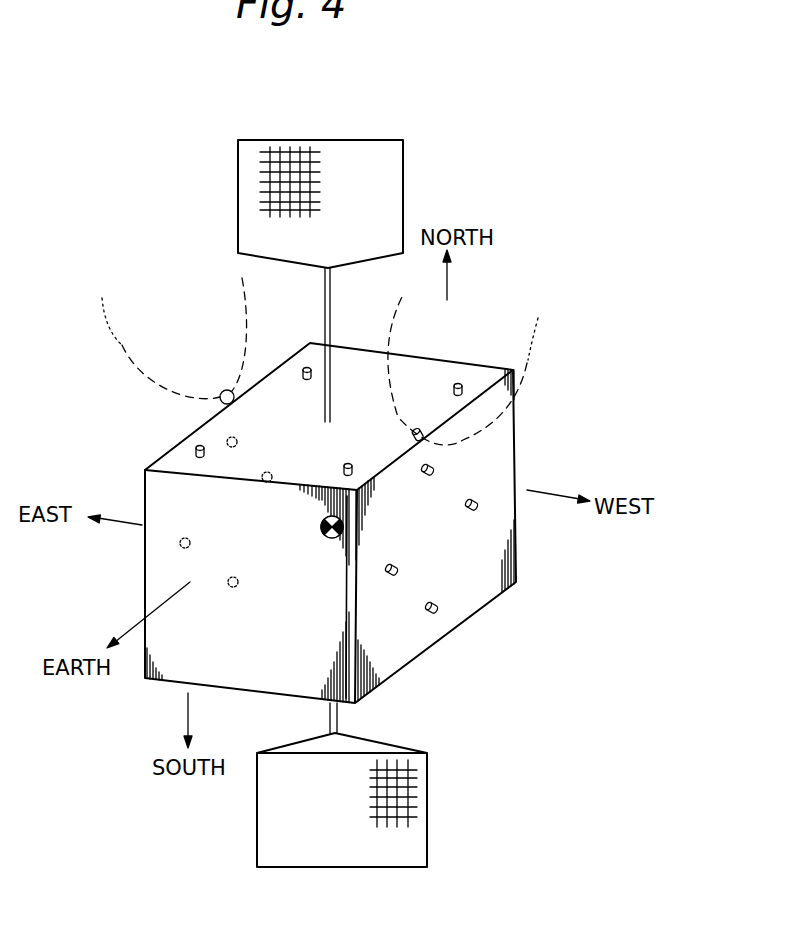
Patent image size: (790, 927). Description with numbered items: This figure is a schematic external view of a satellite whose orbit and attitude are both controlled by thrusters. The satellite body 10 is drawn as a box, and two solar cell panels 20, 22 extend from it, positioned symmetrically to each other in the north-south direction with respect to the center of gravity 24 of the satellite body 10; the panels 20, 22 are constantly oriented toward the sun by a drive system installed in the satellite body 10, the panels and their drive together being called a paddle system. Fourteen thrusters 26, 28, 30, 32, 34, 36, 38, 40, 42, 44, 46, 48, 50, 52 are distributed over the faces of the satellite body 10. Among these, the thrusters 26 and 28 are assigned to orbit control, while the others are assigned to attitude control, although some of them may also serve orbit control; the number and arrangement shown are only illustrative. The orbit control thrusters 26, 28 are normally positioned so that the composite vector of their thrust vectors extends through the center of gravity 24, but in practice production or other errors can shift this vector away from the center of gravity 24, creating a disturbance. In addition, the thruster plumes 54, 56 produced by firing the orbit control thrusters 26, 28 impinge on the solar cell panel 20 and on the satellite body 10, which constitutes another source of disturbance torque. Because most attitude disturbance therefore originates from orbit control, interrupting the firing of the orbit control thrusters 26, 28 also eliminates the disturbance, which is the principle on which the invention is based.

The satellite body 10 is at (518, 568).
The solar cell panel 20 is at (403, 184).
The solar cell panel 22 is at (427, 806).
The center of gravity 24 is at (326, 538).
The orbit control thruster 26 is at (223, 390).
The orbit control thruster 28 is at (417, 428).
The thruster 30 is at (183, 537).
The thruster 32 is at (238, 575).
The thruster 34 is at (272, 472).
The thruster 36 is at (236, 436).
The thruster 38 is at (352, 465).
The thruster 40 is at (204, 456).
The thruster 42 is at (307, 381).
The thruster 44 is at (466, 385).
The thruster 46 is at (423, 476).
The thruster 48 is at (474, 498).
The thruster 50 is at (432, 600).
The thruster 52 is at (388, 566).
The thruster plume 54 is at (474, 368).
The thruster plume 56 is at (166, 335).